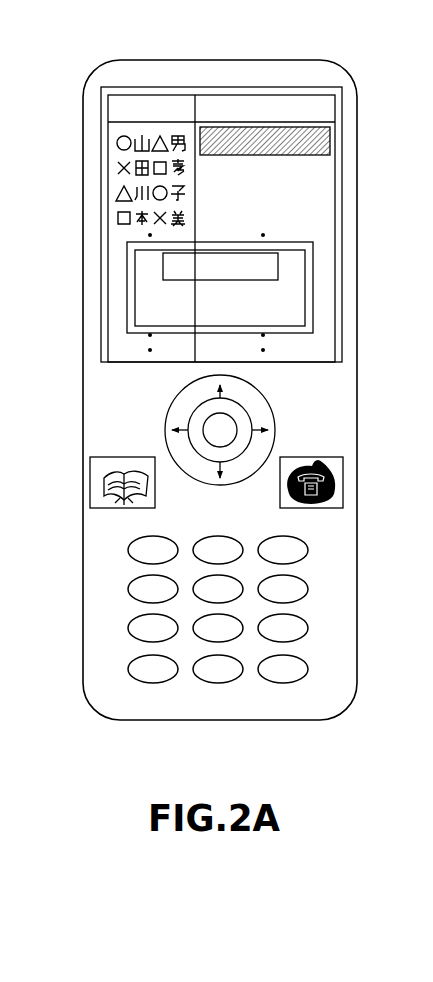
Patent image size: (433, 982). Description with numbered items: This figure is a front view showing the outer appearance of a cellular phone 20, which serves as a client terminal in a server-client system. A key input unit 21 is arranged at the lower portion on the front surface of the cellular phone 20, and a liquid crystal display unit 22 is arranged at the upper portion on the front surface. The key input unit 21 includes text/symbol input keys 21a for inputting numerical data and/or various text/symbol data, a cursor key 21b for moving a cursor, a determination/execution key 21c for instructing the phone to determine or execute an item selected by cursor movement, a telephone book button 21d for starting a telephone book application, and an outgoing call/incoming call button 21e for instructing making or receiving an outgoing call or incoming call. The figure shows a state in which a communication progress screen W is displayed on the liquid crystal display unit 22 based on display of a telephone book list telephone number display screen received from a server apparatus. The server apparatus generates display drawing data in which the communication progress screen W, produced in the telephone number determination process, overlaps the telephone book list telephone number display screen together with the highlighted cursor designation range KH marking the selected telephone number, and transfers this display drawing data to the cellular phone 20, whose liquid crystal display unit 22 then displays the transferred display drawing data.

The cellular phone 20 is at (342, 61).
The key input unit 21 is at (217, 573).
The text/symbol input keys 21a is at (335, 615).
The cursor key 21b is at (165, 403).
The determination/execution key 21c is at (237, 415).
The telephone book button 21d is at (105, 466).
The outgoing call/incoming call button 21e is at (337, 466).
The liquid crystal display unit 22 is at (255, 224).
The highlighted cursor designation range KH is at (331, 137).
The communication progress screen W is at (313, 300).